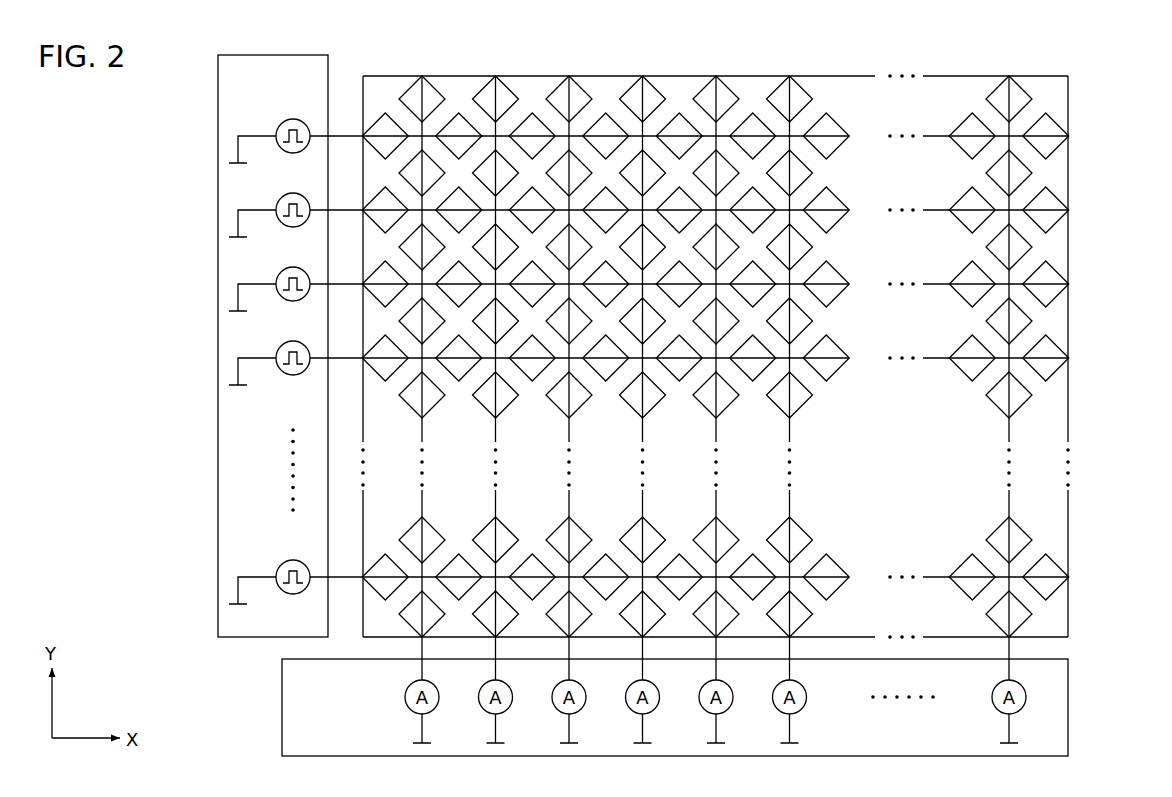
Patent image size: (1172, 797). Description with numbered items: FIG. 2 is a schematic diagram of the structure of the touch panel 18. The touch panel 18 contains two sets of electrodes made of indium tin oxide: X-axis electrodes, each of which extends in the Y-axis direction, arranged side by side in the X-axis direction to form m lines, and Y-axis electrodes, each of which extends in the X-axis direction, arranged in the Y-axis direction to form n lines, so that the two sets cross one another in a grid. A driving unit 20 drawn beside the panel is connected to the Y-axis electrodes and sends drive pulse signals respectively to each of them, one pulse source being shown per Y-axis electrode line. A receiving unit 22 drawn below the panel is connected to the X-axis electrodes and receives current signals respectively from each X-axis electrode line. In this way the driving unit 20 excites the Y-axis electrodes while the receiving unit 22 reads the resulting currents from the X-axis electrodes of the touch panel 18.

The touch panel 18 is at (757, 332).
The driving unit 20 is at (218, 172).
The receiving unit 22 is at (282, 707).